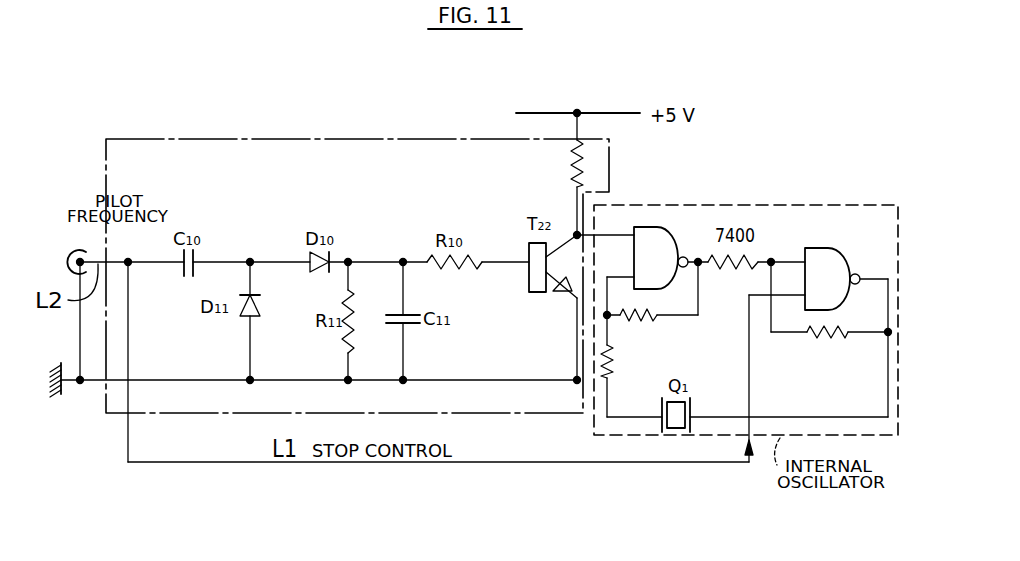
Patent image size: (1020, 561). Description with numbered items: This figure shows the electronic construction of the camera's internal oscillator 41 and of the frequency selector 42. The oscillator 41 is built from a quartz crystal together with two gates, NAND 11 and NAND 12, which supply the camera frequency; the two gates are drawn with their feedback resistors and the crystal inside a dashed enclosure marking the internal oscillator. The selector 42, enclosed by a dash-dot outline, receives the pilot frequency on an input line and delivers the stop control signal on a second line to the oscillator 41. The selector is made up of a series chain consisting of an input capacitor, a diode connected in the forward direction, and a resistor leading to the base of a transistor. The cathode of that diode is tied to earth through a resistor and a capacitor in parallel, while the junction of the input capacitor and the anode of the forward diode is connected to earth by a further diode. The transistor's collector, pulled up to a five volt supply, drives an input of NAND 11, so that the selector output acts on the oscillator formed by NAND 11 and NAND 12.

The selector 42 is at (273, 163).
The oscillator 41 is at (703, 228).
The NAND gate 11 is at (655, 242).
The NAND gate 12 is at (823, 258).